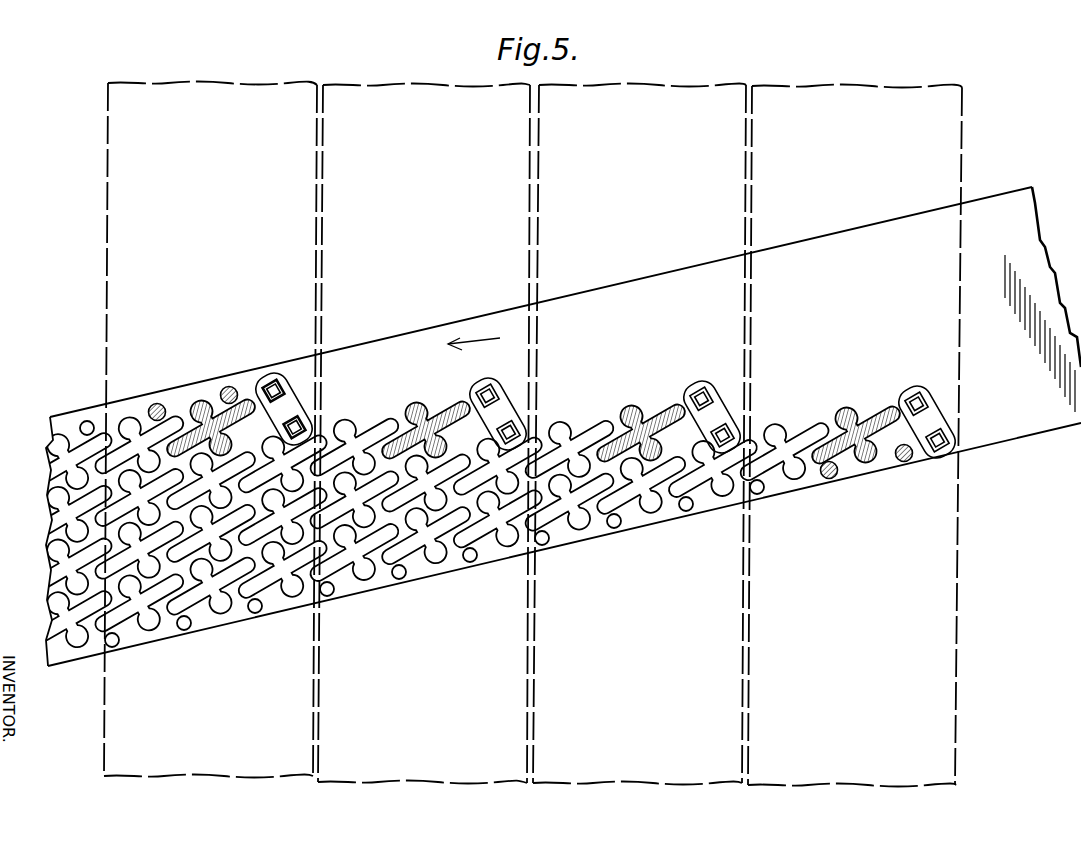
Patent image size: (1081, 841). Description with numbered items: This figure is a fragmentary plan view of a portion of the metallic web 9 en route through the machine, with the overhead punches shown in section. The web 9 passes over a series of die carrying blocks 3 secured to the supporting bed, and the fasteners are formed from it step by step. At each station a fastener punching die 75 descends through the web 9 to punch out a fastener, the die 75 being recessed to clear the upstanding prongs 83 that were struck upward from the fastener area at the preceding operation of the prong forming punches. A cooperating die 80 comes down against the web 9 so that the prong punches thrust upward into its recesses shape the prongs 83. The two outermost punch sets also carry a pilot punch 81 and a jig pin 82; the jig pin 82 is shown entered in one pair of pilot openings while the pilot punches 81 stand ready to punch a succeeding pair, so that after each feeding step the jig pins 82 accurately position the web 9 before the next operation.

The die carrying block 3 is at (333, 86).
The web 9 is at (400, 345).
The fastener punching die 75 is at (200, 408).
The die cooperating with the prong forming punches 80 is at (287, 396).
The pilot punch 81 is at (228, 387).
The jig pin 82 is at (156, 404).
The upstanding prongs 83 is at (278, 390).